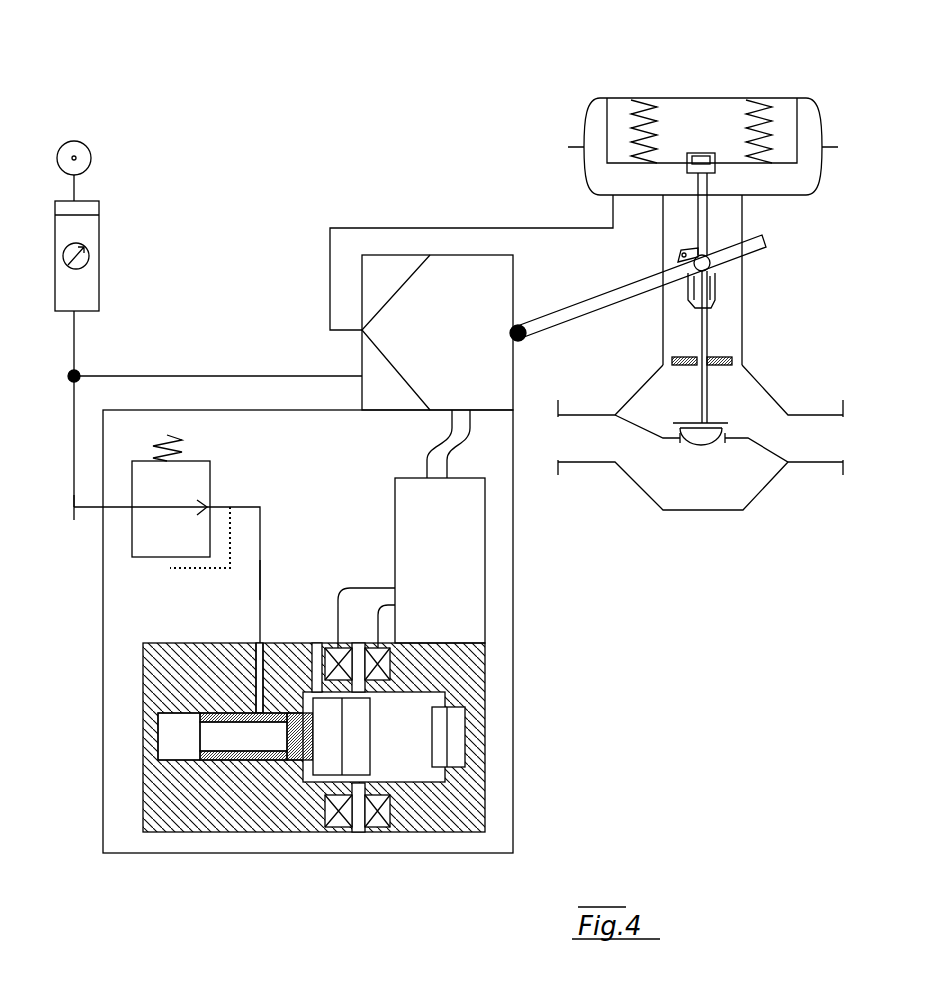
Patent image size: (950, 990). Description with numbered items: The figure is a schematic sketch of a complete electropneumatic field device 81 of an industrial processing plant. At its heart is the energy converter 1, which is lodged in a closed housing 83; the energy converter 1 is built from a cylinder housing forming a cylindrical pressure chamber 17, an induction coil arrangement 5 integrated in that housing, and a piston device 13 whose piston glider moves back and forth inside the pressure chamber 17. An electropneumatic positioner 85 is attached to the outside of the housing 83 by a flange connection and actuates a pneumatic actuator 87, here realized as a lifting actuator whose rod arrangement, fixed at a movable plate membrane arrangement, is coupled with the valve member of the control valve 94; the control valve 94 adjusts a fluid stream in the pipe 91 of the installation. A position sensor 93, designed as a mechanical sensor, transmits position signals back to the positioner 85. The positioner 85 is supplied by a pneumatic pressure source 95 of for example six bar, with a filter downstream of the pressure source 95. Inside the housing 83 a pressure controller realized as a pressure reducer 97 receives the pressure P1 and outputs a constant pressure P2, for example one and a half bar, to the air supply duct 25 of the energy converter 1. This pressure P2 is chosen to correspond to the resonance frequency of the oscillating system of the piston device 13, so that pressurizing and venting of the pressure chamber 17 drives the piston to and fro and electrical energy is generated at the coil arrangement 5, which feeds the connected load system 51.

The energy converter 1 is at (243, 832).
The induction coil arrangement 5 is at (340, 832).
The piston device 13 is at (291, 762).
The cylindrical pressure chamber 17 is at (222, 736).
The air supply duct 25 is at (282, 638).
The load system 51 is at (411, 563).
The electropneumatic field device 81 is at (374, 140).
The closed housing 83 is at (513, 723).
The electropneumatic positioner 85 is at (472, 353).
The pneumatic actuator 87 is at (606, 98).
The pipe 91 is at (634, 497).
The position sensor 93 is at (586, 315).
The control valve 94 is at (742, 297).
The pneumatic pressure source 95 is at (90, 143).
The pressure reducer 97 is at (227, 476).
The pressure p1 P1 is at (92, 510).
The pressure p2 P2 is at (262, 580).